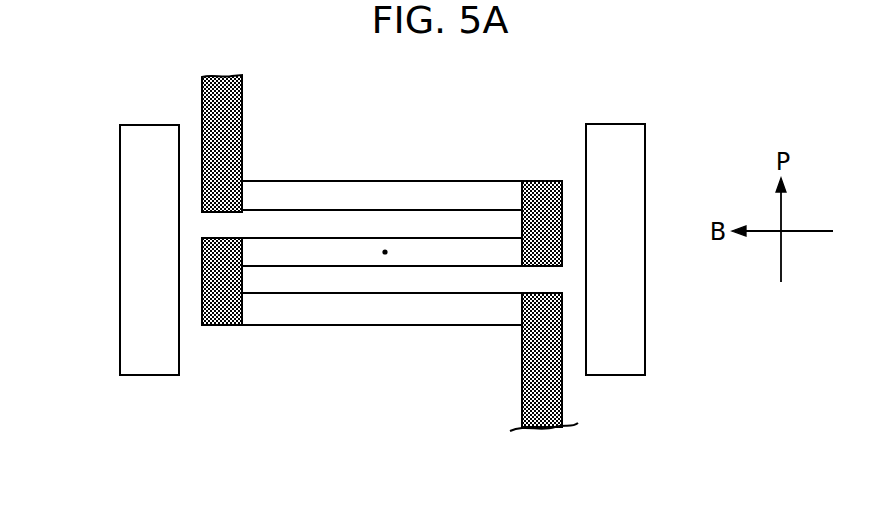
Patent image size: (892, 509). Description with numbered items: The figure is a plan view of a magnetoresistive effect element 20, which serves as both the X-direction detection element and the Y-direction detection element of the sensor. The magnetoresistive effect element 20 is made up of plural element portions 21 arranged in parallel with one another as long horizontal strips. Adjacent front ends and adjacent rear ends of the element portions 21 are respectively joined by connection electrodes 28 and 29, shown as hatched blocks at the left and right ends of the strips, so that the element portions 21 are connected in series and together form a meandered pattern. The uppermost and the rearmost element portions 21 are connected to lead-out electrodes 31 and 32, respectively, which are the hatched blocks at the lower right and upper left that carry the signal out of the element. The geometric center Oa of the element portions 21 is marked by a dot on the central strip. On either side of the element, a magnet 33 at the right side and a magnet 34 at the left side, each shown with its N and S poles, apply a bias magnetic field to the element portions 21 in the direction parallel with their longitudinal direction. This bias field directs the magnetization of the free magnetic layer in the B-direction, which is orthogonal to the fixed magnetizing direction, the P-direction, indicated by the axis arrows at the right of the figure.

The magnetoresistive effect element 20 is at (437, 137).
The element portions 21 is at (357, 310).
The connection electrode 28 is at (218, 317).
The connection electrode 29 is at (540, 195).
The lead-out electrode 31 is at (537, 398).
The lead-out electrode 32 is at (233, 111).
The magnet 33 is at (627, 305).
The magnet 34 is at (140, 342).
The geometric center Oa is at (387, 256).